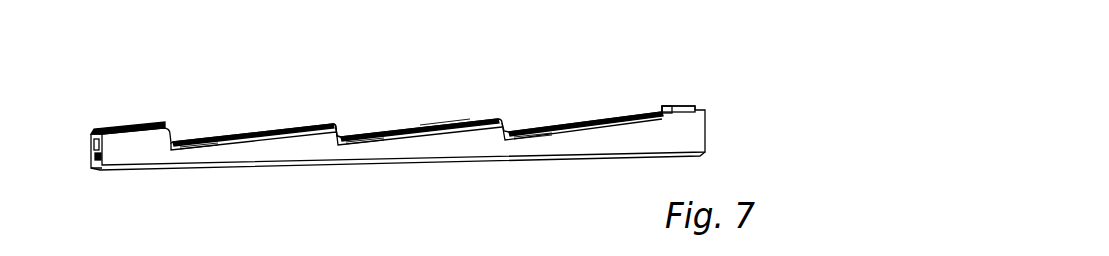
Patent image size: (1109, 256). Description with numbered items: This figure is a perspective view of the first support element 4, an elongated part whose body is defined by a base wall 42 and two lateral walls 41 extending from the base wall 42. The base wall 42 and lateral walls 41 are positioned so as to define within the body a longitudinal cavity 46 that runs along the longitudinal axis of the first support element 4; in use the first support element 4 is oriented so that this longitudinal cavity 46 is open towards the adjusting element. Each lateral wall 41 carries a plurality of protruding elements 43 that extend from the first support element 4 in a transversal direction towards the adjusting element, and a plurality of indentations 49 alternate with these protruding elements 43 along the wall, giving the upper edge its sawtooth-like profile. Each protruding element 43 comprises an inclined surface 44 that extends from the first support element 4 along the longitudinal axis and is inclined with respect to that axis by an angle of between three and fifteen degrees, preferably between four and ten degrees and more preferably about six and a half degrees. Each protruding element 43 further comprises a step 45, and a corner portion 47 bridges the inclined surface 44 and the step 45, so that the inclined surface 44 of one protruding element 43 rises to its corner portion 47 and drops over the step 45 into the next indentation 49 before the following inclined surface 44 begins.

The first support element 4 is at (425, 133).
The lateral wall 41 is at (120, 121).
The base wall 42 is at (137, 170).
The protruding element 43 is at (288, 147).
The inclined surface 44 is at (292, 124).
The step 45 is at (341, 136).
The longitudinal cavity 46 is at (636, 104).
The corner portion 47 is at (336, 126).
The indentation 49 is at (435, 108).